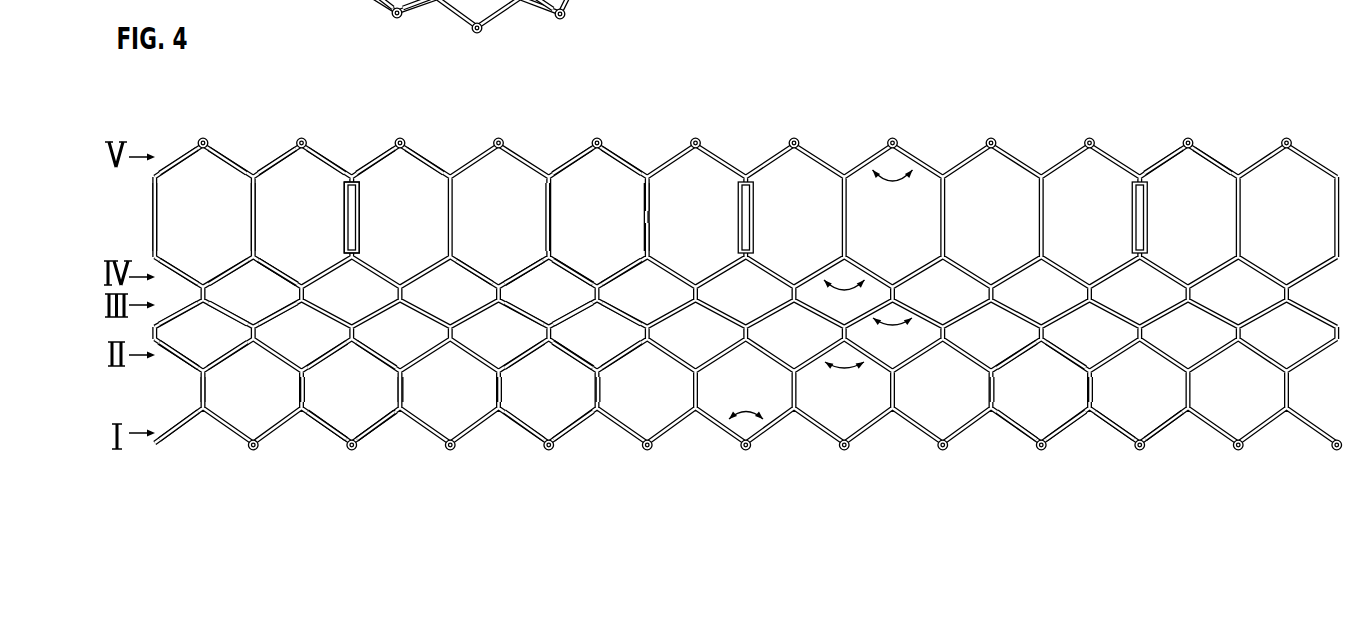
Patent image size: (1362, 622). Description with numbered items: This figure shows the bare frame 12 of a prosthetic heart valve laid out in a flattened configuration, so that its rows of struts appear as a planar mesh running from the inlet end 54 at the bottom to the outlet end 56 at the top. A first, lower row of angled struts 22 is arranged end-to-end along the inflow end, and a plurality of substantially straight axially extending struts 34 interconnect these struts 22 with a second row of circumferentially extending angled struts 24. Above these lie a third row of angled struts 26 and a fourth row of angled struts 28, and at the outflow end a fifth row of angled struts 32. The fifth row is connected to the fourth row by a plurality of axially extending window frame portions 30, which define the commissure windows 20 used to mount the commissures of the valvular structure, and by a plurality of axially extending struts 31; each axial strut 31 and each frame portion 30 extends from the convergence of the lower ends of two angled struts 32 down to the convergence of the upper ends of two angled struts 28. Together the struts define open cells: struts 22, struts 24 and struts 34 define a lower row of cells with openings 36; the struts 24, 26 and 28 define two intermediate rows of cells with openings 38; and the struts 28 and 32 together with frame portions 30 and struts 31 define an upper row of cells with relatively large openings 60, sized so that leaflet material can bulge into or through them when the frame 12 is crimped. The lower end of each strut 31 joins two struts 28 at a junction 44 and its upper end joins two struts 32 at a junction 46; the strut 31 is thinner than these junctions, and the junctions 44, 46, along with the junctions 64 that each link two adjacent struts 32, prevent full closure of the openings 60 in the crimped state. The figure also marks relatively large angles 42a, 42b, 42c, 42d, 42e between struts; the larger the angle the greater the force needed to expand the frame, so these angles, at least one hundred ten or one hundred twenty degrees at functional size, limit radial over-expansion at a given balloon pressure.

The frame 12 is at (1038, 105).
The commissure window 20 is at (355, 223).
The angled strut of first row 22 is at (417, 12).
The angled strut of second row 24 is at (333, 350).
The angled strut of third row 26 is at (167, 319).
The angled strut of fourth row 28 is at (268, 266).
The window frame portion 30 is at (1146, 194).
The axial strut 31 is at (253, 203).
The angled strut of fifth row 32 is at (262, 170).
The axially extending strut 34 is at (403, 388).
The opening of lower row of cells 36 is at (1055, 415).
The opening of intermediate row of cells 38 is at (602, 353).
The angle between struts 42a is at (917, 181).
The angle between struts 42b is at (867, 293).
The angle between struts 42c is at (893, 325).
The angle between struts 42d is at (847, 369).
The angle between struts 42e is at (765, 408).
The junction 44 is at (648, 256).
The junction 46 is at (649, 180).
The inlet end 54 is at (553, 15).
The outlet end 56 is at (1189, 140).
The opening of upper row of cells 60 is at (613, 177).
The junction 64 is at (497, 280).